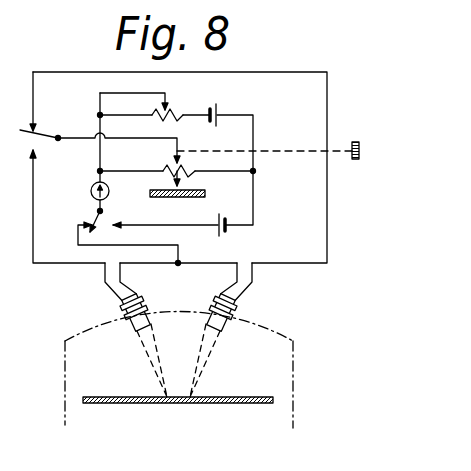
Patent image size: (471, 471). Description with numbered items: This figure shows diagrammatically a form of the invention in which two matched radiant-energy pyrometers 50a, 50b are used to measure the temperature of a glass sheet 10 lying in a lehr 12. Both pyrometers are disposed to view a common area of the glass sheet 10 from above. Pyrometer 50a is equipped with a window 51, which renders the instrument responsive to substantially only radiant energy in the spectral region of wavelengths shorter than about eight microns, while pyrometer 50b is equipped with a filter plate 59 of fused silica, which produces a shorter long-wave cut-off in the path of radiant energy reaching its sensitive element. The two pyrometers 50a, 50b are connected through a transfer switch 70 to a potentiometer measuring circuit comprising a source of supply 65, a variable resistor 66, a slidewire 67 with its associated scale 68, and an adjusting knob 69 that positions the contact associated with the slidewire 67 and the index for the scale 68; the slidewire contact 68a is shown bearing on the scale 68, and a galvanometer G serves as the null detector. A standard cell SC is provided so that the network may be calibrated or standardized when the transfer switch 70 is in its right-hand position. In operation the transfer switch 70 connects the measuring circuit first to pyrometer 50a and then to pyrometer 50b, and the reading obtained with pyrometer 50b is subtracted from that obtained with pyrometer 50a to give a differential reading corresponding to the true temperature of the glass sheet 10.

The transfer switch 70 is at (46, 132).
The variable resistor 66 is at (168, 112).
The source of supply 65 is at (218, 104).
The adjusting knob 69 is at (356, 141).
The slidewire 67 is at (172, 170).
The sliding contact 68a is at (163, 192).
The scale 68 is at (206, 195).
The galvanometer G is at (90, 191).
The standard cell SC is at (226, 231).
The radiant-energy pyrometer 50a is at (139, 296).
The radiant-energy pyrometer 50b is at (246, 305).
The window 51 is at (128, 330).
The filter plate 59 is at (227, 327).
The lehr 12 is at (297, 383).
The glass sheet 10 is at (212, 403).